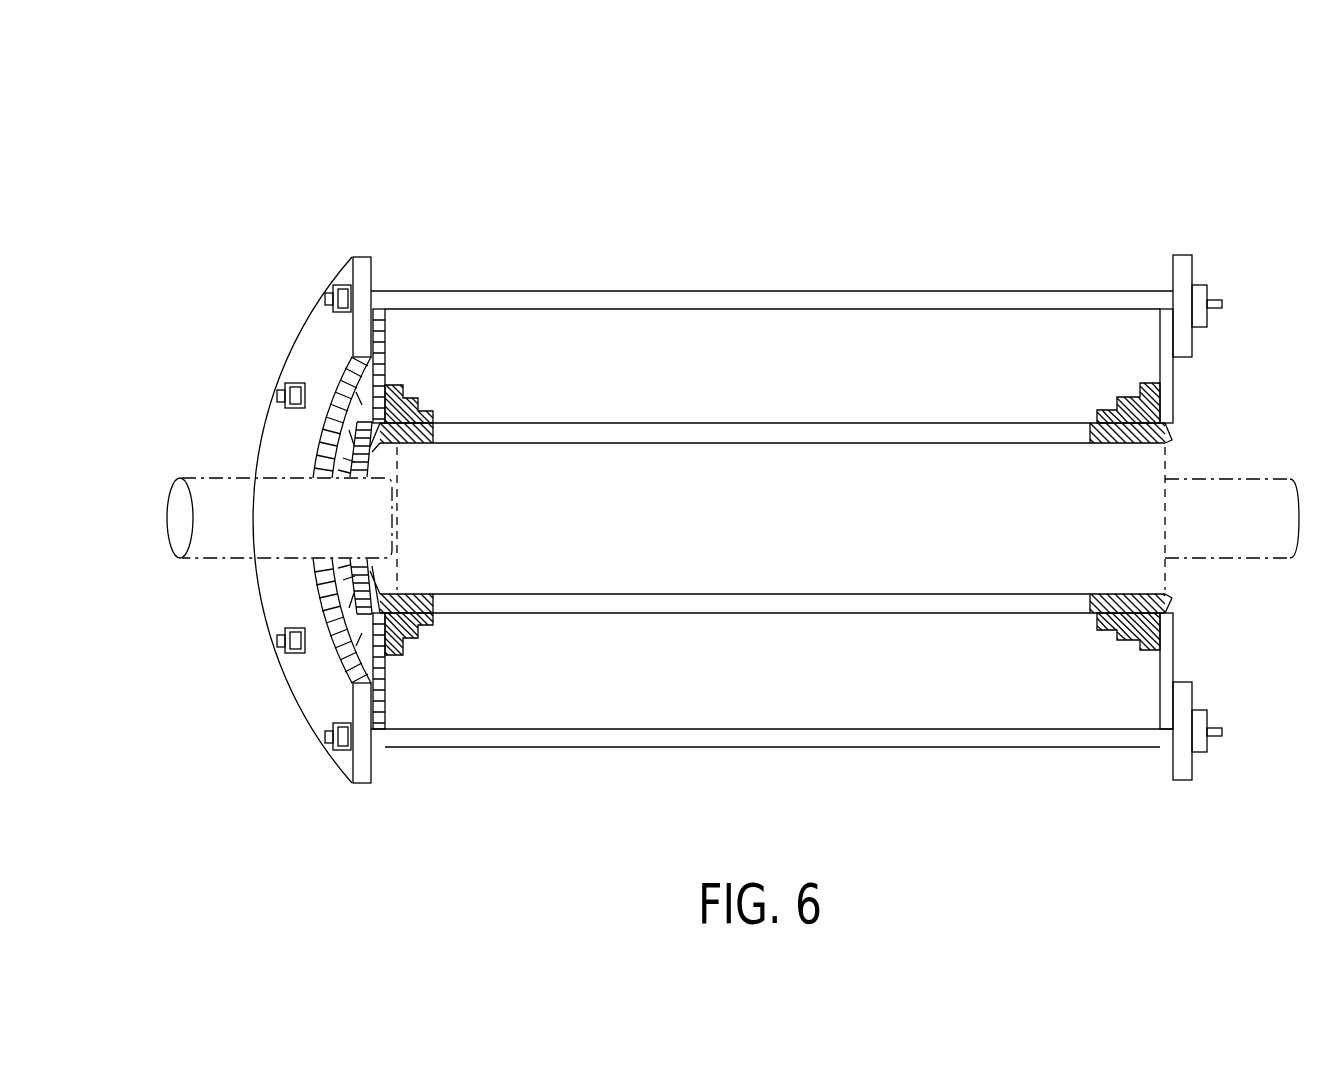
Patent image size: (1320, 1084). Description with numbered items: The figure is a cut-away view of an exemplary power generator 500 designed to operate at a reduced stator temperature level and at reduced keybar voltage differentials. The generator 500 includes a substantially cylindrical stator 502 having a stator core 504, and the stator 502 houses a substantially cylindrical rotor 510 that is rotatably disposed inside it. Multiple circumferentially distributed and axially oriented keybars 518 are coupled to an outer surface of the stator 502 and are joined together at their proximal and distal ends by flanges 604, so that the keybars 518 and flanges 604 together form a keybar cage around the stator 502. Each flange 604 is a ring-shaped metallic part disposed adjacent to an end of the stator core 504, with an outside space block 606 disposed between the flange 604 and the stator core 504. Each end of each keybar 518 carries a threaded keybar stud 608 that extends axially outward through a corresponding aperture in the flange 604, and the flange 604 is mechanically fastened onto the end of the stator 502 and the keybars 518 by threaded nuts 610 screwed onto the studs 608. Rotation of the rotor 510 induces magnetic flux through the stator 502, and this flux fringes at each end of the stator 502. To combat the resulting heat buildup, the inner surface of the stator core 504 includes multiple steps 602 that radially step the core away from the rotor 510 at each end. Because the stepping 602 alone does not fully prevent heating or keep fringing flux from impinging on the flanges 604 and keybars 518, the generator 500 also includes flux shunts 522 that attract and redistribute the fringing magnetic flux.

The power generator 500 is at (512, 187).
The stator 502 is at (730, 345).
The stator core 504 is at (860, 345).
The rotor 510 is at (1150, 558).
The keybar 518 is at (620, 291).
The flux shunt 522 is at (412, 398).
The step 602 is at (438, 387).
The flange 604 is at (270, 436).
The outside space block 606 is at (392, 322).
The keybar stud 608 is at (328, 296).
The threaded nut 610 is at (285, 392).